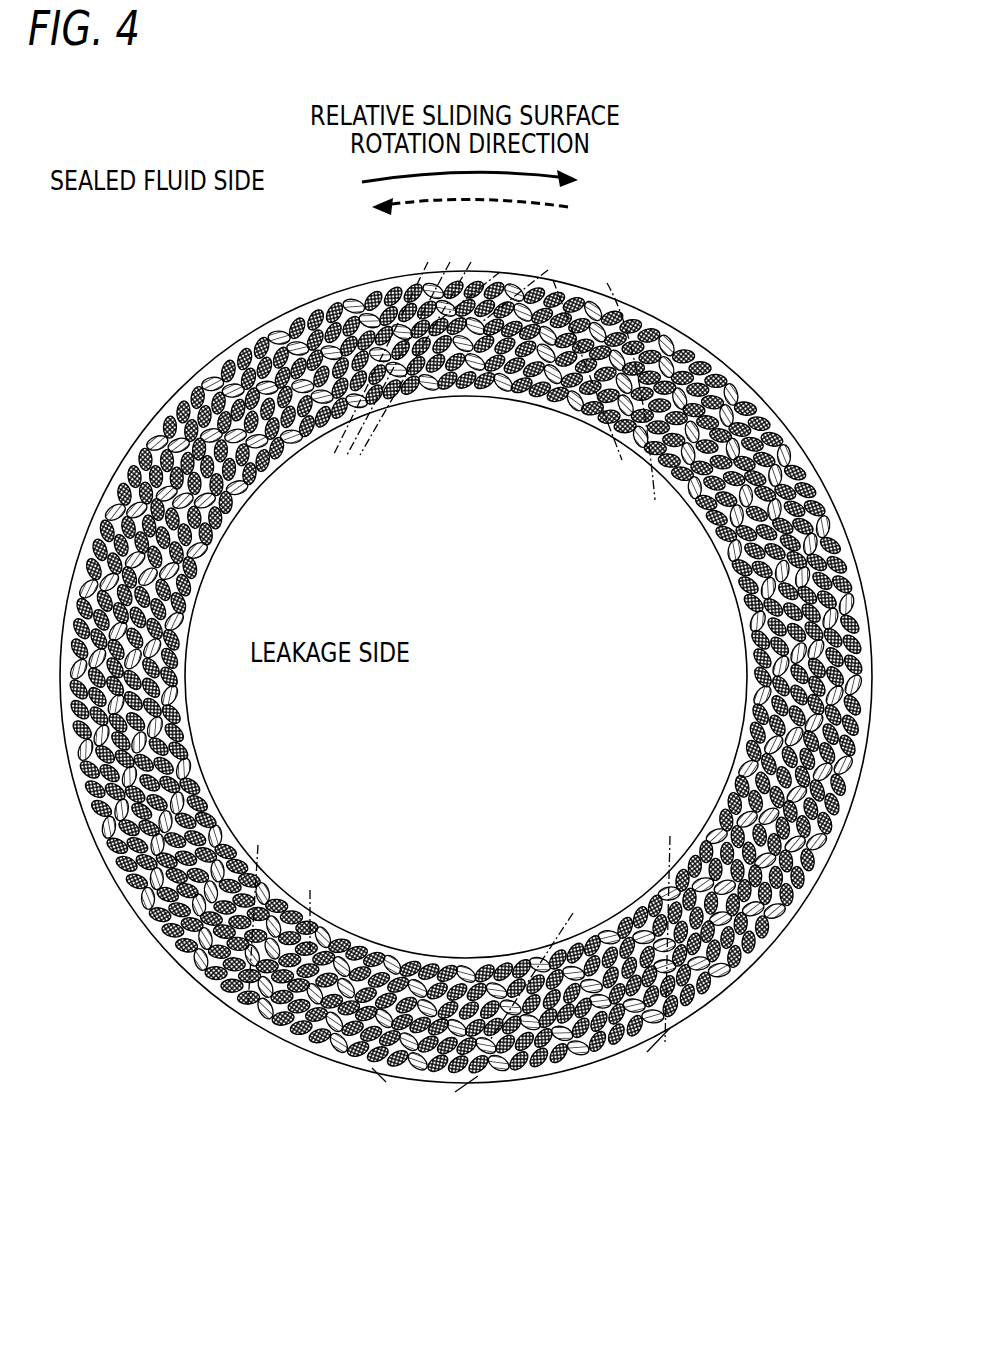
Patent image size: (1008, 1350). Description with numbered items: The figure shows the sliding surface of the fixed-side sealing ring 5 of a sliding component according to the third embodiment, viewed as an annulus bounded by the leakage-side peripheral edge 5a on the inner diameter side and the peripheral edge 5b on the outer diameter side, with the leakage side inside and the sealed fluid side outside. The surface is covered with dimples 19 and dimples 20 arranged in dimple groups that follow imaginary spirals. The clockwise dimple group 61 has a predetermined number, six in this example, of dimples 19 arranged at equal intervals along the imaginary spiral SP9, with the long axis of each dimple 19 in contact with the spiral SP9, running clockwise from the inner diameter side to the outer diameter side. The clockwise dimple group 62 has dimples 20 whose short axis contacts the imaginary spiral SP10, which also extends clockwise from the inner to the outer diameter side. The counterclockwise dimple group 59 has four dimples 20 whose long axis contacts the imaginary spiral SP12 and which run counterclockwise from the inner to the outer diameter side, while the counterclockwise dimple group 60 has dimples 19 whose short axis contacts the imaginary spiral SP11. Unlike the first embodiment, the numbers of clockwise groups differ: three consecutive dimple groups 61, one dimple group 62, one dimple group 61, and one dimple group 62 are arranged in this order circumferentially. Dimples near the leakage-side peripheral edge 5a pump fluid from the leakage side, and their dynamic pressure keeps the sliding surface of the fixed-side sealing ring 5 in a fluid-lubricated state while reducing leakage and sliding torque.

The fixed-side sealing ring 5 is at (475, 676).
The leakage-side peripheral edge 5a is at (722, 564).
The sealed fluid-side peripheral edge 5b is at (808, 457).
The dimple 19 is at (262, 1005).
The dimple 20 is at (243, 1007).
The counterclockwise dimple group 59 is at (240, 854).
The counterclockwise dimple group 60 is at (336, 912).
The clockwise dimple group 61 is at (536, 942).
The clockwise dimple group 62 is at (654, 878).
The imaginary spiral SP9 is at (372, 445).
The imaginary spiral SP10 is at (548, 270).
The imaginary spiral SP11 is at (462, 616).
The imaginary spiral SP12 is at (460, 644).